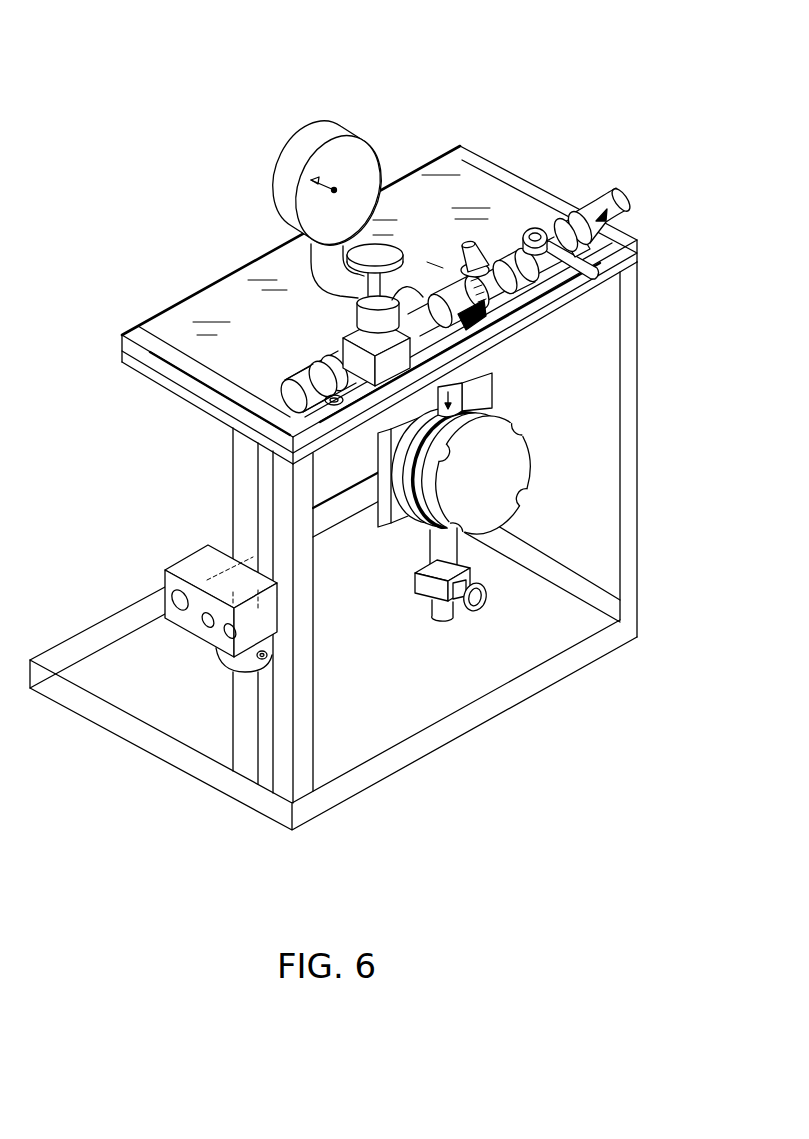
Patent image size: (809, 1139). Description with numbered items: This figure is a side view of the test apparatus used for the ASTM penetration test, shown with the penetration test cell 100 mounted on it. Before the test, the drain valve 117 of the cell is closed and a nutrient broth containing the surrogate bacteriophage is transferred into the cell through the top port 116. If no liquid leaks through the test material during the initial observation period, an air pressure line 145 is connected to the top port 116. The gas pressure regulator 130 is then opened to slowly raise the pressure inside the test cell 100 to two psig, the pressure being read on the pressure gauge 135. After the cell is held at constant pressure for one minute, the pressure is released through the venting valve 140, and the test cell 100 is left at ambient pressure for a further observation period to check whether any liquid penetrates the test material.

The penetration test cell 100 is at (531, 459).
The top port 116 is at (542, 338).
The drain valve 117 is at (485, 605).
The gas pressure regulator 130 is at (343, 322).
The pressure gauge 135 is at (287, 147).
The venting valve 140 is at (532, 225).
The air pressure line 145 is at (621, 199).